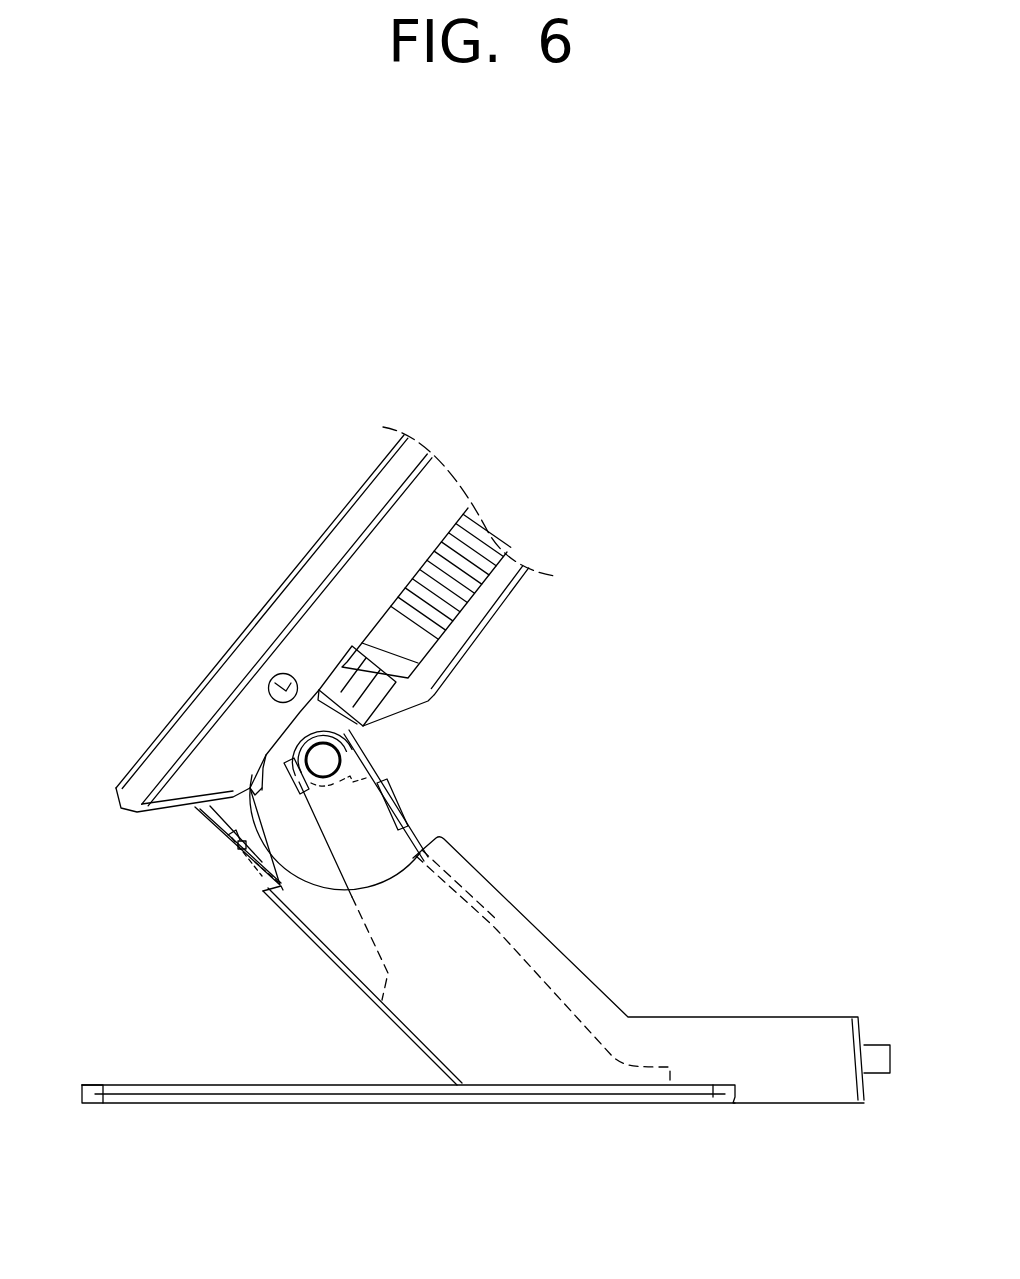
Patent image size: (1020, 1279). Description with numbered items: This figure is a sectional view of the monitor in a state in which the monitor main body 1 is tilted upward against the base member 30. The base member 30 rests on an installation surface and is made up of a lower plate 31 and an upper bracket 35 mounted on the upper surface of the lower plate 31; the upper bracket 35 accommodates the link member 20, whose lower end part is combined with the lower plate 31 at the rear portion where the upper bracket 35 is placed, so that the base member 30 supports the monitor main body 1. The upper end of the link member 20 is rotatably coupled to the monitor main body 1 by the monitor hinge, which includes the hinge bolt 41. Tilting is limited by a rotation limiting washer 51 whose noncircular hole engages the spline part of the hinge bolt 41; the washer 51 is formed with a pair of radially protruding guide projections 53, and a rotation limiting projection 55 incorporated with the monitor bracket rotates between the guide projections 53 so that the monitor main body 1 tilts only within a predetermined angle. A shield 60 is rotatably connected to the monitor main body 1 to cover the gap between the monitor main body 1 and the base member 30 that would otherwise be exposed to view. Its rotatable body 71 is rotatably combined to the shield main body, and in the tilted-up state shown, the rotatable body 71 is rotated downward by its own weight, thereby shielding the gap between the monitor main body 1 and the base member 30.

The monitor main body 1 is at (473, 481).
The link member 20 is at (383, 820).
The base member 30 is at (130, 965).
The lower plate 31 is at (218, 1083).
The upper bracket 35 is at (302, 943).
The hinge bolt 41 is at (327, 760).
The rotation limiting washer 51 is at (357, 733).
The guide projection 53 is at (252, 775).
The rotation limiting projection 55 is at (287, 761).
The shield 60 is at (208, 837).
The rotatable body 71 is at (278, 884).